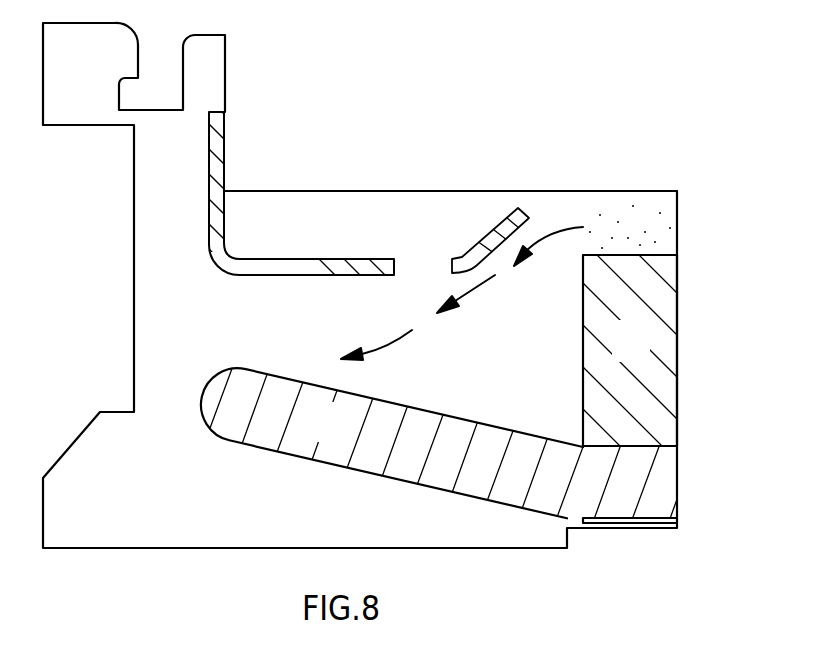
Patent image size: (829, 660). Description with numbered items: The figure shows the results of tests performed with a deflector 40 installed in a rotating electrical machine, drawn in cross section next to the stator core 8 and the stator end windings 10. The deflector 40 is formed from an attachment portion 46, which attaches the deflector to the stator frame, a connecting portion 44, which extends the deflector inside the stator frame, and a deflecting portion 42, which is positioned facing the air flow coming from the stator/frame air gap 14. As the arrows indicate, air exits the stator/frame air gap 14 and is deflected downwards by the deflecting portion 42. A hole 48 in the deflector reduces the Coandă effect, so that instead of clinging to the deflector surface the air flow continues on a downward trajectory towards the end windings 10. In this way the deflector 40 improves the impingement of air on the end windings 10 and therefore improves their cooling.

The stator core 8 is at (641, 357).
The end windings 10 is at (332, 439).
The stator/frame air gap 14 is at (627, 228).
The deflector 40 is at (379, 146).
The deflecting portion 42 is at (520, 210).
The connecting portion 44 is at (287, 268).
The attachment portion 46 is at (217, 167).
The hole 48 is at (423, 268).